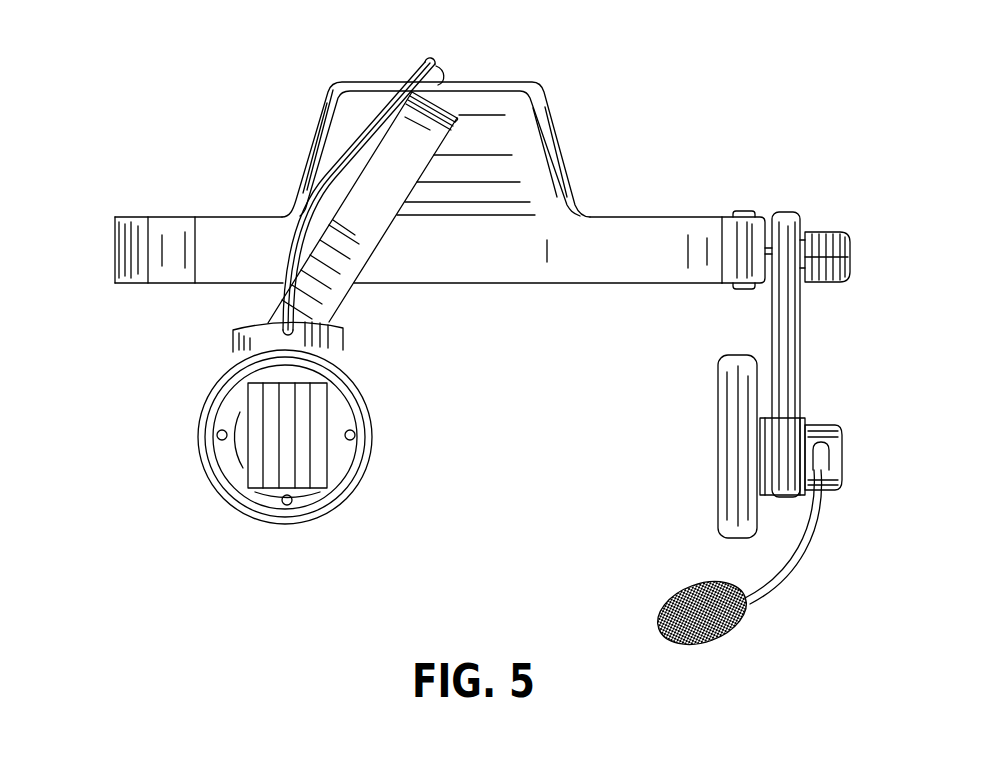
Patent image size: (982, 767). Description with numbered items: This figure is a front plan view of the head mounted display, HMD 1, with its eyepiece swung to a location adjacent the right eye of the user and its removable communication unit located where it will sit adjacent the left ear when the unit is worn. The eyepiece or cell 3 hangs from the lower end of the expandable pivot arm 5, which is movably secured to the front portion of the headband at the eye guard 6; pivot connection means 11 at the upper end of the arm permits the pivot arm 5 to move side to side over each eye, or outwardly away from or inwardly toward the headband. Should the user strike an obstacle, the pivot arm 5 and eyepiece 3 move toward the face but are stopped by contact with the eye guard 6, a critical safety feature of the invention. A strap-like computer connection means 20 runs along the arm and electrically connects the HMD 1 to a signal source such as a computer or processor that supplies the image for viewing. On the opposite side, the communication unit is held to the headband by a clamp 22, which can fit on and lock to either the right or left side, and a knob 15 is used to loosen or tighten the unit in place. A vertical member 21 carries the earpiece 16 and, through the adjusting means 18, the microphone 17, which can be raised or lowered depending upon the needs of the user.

The HMD 1 is at (172, 150).
The eyepiece 3 is at (360, 387).
The pivot arm 5 is at (368, 230).
The eye guard 6 is at (507, 173).
The pivot connection means 11 is at (443, 99).
The knob 15 is at (823, 232).
The earpiece 16 is at (718, 418).
The microphone 17 is at (720, 640).
The adjusting means 18 is at (818, 426).
The computer connection means 20 is at (410, 74).
The support bar 21 is at (790, 332).
The clamp 22 is at (743, 210).